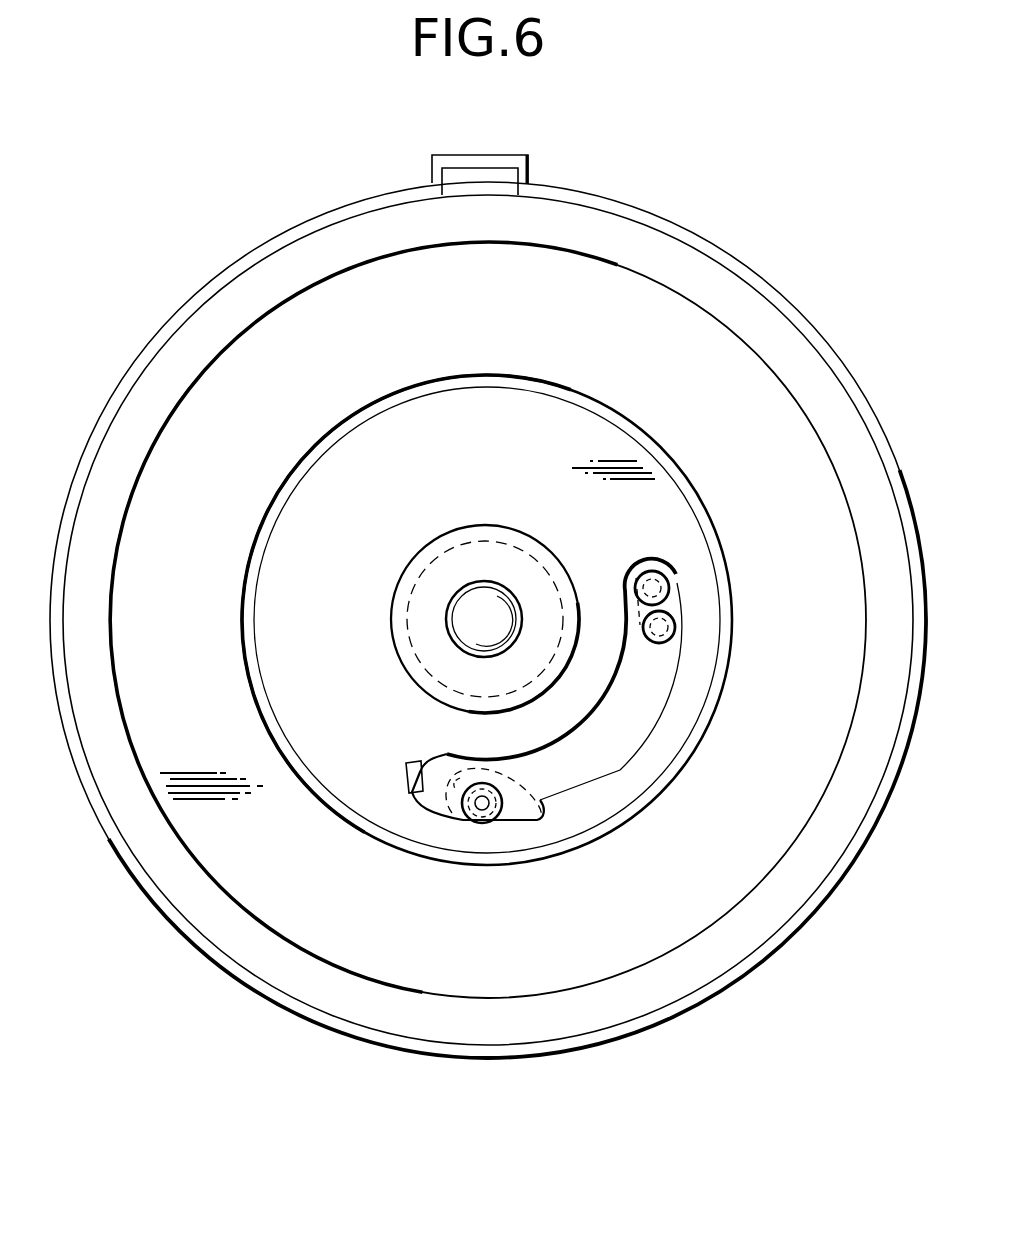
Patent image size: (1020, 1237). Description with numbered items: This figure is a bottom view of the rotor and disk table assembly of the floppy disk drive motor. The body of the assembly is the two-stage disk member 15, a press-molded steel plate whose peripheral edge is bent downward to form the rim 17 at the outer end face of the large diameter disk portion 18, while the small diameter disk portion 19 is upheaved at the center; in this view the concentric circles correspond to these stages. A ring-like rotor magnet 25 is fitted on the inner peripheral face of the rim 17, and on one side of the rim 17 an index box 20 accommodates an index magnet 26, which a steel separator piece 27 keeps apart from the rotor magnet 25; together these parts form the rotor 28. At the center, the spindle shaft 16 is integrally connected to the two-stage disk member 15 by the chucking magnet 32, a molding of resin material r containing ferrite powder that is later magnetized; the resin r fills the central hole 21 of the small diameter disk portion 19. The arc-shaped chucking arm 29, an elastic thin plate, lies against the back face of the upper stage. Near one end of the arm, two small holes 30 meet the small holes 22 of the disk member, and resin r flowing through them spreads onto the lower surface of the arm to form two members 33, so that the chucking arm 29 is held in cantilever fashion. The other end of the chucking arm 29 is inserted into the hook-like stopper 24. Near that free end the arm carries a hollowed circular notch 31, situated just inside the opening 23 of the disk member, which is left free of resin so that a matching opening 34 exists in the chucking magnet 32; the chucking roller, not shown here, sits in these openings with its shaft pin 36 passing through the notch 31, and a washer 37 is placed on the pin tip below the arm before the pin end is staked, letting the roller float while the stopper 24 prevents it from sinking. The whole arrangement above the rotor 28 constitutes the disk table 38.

The two-stage disk member 15 is at (492, 620).
The spindle shaft 16 is at (447, 617).
The rim 17 is at (852, 397).
The large diameter disk portion 18 is at (488, 575).
The small diameter disk portion 19 is at (620, 447).
The index box 20 is at (449, 154).
The central hole 21 is at (503, 550).
The small holes 22 is at (561, 639).
The opening 23 is at (478, 763).
The hook-like stopper 24 is at (410, 790).
The rotor magnet 25 is at (703, 277).
The index magnet 26 is at (517, 141).
The separator piece 27 is at (508, 181).
The rotor 28 is at (823, 340).
The chucking arm 29 is at (599, 792).
The small holes 30 is at (628, 566).
The notch 31 is at (493, 824).
The chucking magnet 32 is at (432, 537).
The members 33 is at (661, 622).
The opening 34 is at (469, 762).
The shaft pin 36 is at (478, 818).
The washer 37 is at (505, 818).
The disk table 38 is at (446, 587).
The resin material r is at (677, 573).